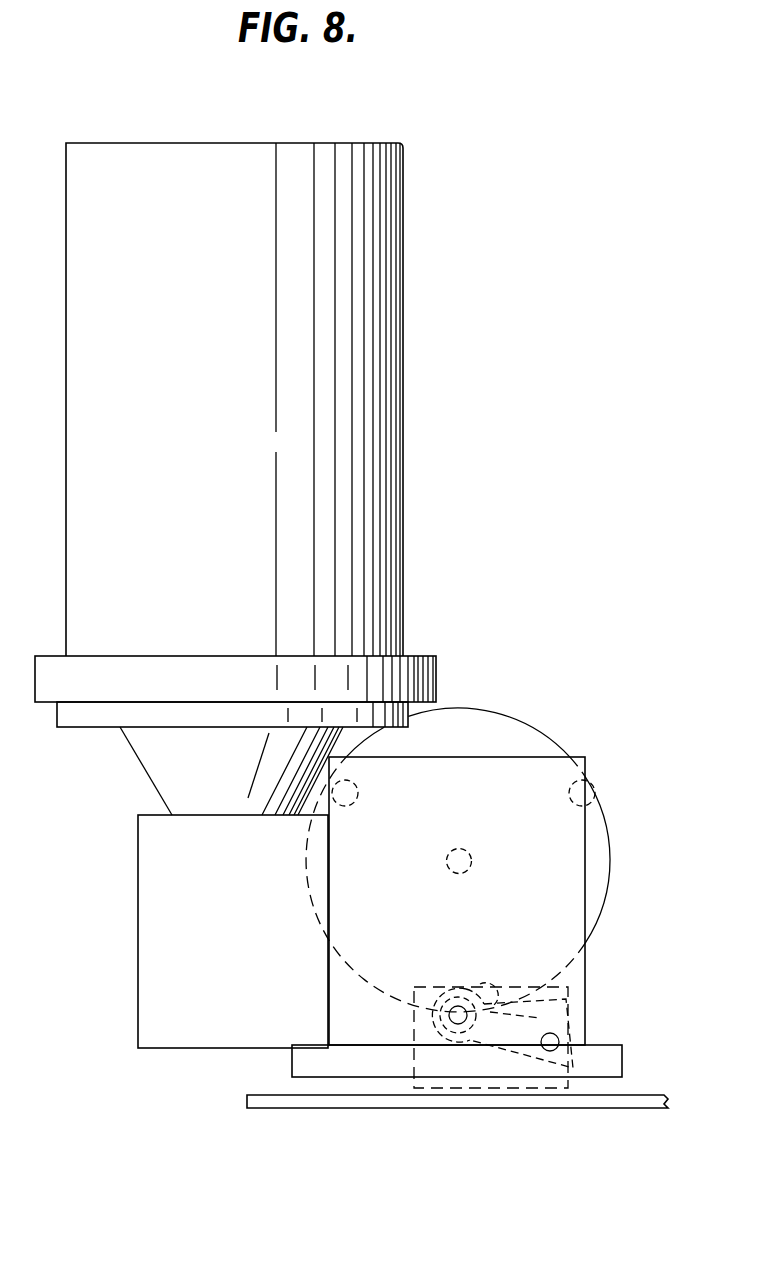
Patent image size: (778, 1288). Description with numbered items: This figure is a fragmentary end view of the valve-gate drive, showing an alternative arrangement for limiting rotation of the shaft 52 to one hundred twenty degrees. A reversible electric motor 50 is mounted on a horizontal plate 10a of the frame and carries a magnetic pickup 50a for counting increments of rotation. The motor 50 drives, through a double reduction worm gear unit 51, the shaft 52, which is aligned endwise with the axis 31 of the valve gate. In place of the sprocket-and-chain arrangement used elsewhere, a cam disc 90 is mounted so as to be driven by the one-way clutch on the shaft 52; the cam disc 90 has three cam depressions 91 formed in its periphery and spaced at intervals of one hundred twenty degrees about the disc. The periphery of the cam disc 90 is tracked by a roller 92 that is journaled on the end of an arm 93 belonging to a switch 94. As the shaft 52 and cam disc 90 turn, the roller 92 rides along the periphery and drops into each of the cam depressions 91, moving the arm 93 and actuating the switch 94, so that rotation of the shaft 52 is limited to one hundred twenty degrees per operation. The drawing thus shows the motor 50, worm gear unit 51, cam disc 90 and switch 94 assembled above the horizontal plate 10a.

The reversible electric motor 50 is at (250, 388).
The magnetic pickup 50a is at (253, 663).
The double reduction worm gear unit 51 is at (242, 958).
The cam disc 90 is at (510, 732).
The cam depressions 91 is at (360, 797).
The shaft 52 is at (453, 848).
The axis 31 is at (447, 862).
The roller 92 is at (457, 988).
The arm 93 is at (570, 1001).
The switch 94 is at (413, 1037).
The horizontal plate 10a is at (342, 1100).